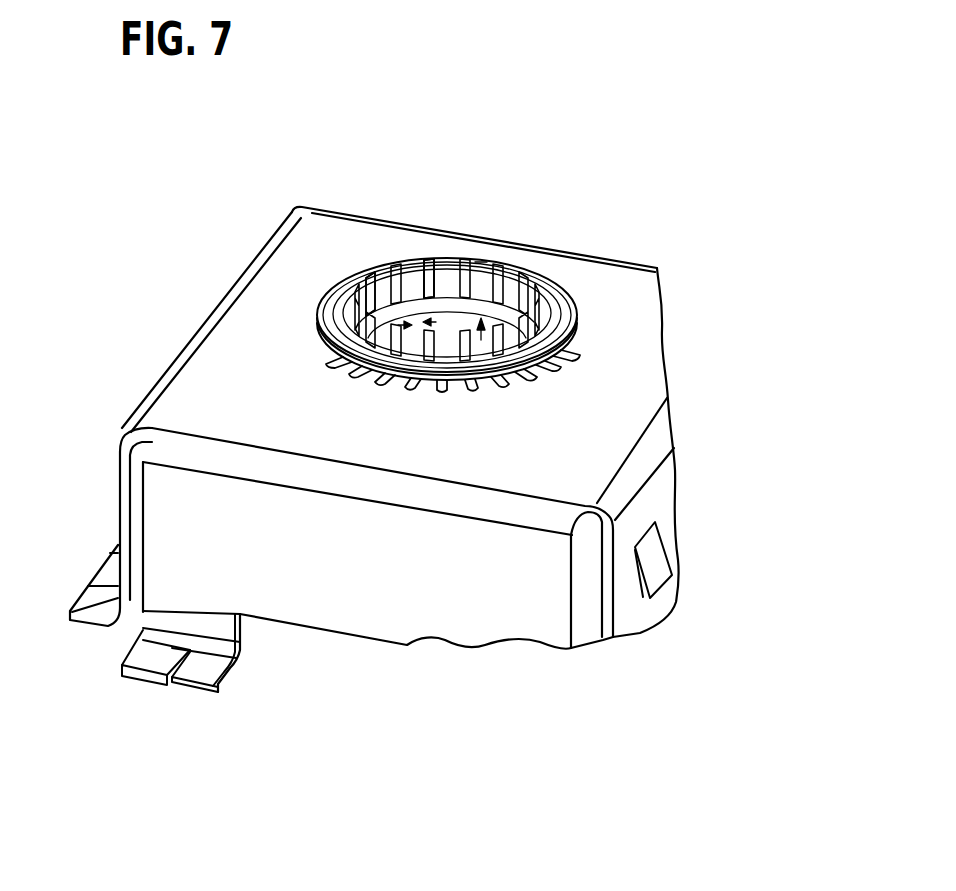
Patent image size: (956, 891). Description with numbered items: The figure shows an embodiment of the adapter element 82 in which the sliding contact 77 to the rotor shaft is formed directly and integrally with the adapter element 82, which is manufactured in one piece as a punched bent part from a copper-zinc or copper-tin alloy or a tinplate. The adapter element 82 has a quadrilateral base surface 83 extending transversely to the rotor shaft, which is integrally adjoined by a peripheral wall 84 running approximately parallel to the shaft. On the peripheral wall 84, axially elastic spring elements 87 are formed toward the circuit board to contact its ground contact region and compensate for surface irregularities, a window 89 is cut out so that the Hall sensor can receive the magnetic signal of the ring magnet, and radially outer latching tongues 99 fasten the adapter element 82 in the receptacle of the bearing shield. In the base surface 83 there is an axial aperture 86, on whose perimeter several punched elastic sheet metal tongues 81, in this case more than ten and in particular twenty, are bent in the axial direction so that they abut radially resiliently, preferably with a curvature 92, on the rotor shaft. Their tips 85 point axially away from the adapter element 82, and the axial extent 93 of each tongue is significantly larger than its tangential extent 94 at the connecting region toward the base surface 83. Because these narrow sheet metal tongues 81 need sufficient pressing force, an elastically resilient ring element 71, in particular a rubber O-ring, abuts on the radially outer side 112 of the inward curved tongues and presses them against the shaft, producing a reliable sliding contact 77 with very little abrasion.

The adapter element 82 is at (180, 241).
The quadrilateral base surface 83 is at (615, 380).
The peripheral wall 84 is at (182, 515).
The spring elements 87 is at (90, 602).
The window 89 is at (278, 638).
The latching tongues 99 is at (655, 560).
The resilient ring element 71 is at (567, 312).
The sheet metal tongues 81 is at (528, 272).
The sliding contact 77 is at (429, 278).
The curvature 92 is at (378, 270).
The tips 85 is at (428, 265).
The axial extent 93 is at (481, 260).
The tangential extent 94 is at (425, 332).
The axial aperture 86 is at (462, 346).
The radially outer side 112 is at (480, 396).